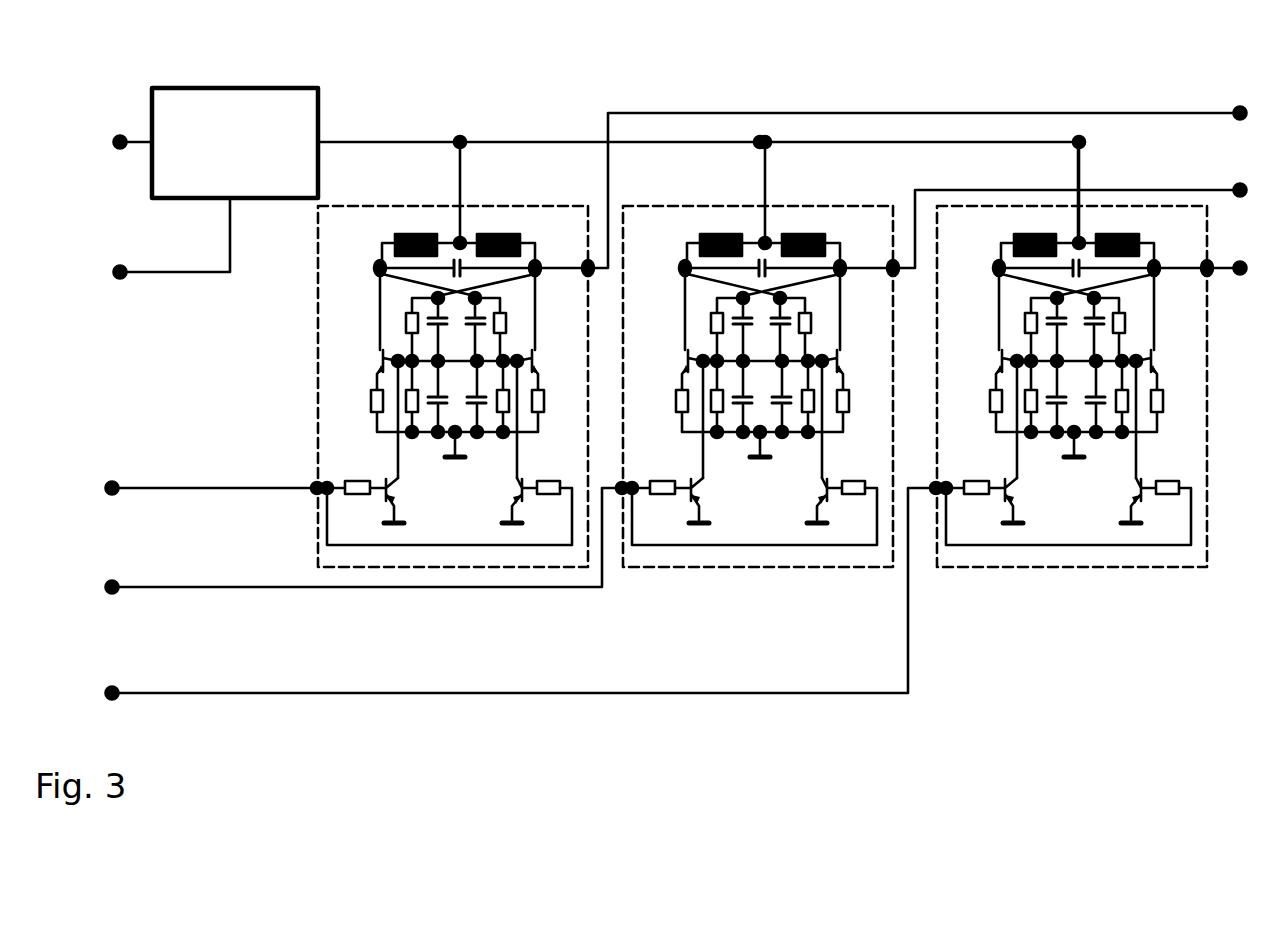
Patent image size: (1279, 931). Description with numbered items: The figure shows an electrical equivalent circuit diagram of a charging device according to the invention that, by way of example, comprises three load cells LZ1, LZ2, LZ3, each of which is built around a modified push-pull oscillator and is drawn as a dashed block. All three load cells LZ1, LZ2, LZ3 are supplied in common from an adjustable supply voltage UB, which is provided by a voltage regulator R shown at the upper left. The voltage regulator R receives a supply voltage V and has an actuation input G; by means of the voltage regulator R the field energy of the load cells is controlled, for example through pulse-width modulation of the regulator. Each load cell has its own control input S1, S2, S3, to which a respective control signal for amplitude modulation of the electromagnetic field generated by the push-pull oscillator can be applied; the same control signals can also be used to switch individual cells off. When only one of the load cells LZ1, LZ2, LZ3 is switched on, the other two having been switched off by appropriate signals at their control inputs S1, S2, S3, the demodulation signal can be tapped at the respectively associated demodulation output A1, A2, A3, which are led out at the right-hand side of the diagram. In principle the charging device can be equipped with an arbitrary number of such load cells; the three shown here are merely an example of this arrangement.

The voltage regulator R is at (235, 143).
The supply voltage of the voltage regulator V is at (130, 117).
The actuation input of the voltage regulator G is at (167, 238).
The supply voltage UB is at (698, 169).
The demodulation output A1 is at (923, 166).
The demodulation output A2 is at (1075, 206).
The demodulation output A3 is at (1232, 247).
The control input S1 is at (207, 462).
The control input S2 is at (359, 541).
The control input S3 is at (516, 594).
The load cell LZ1 is at (452, 351).
The load cell LZ2 is at (757, 351).
The load cell LZ3 is at (1071, 351).